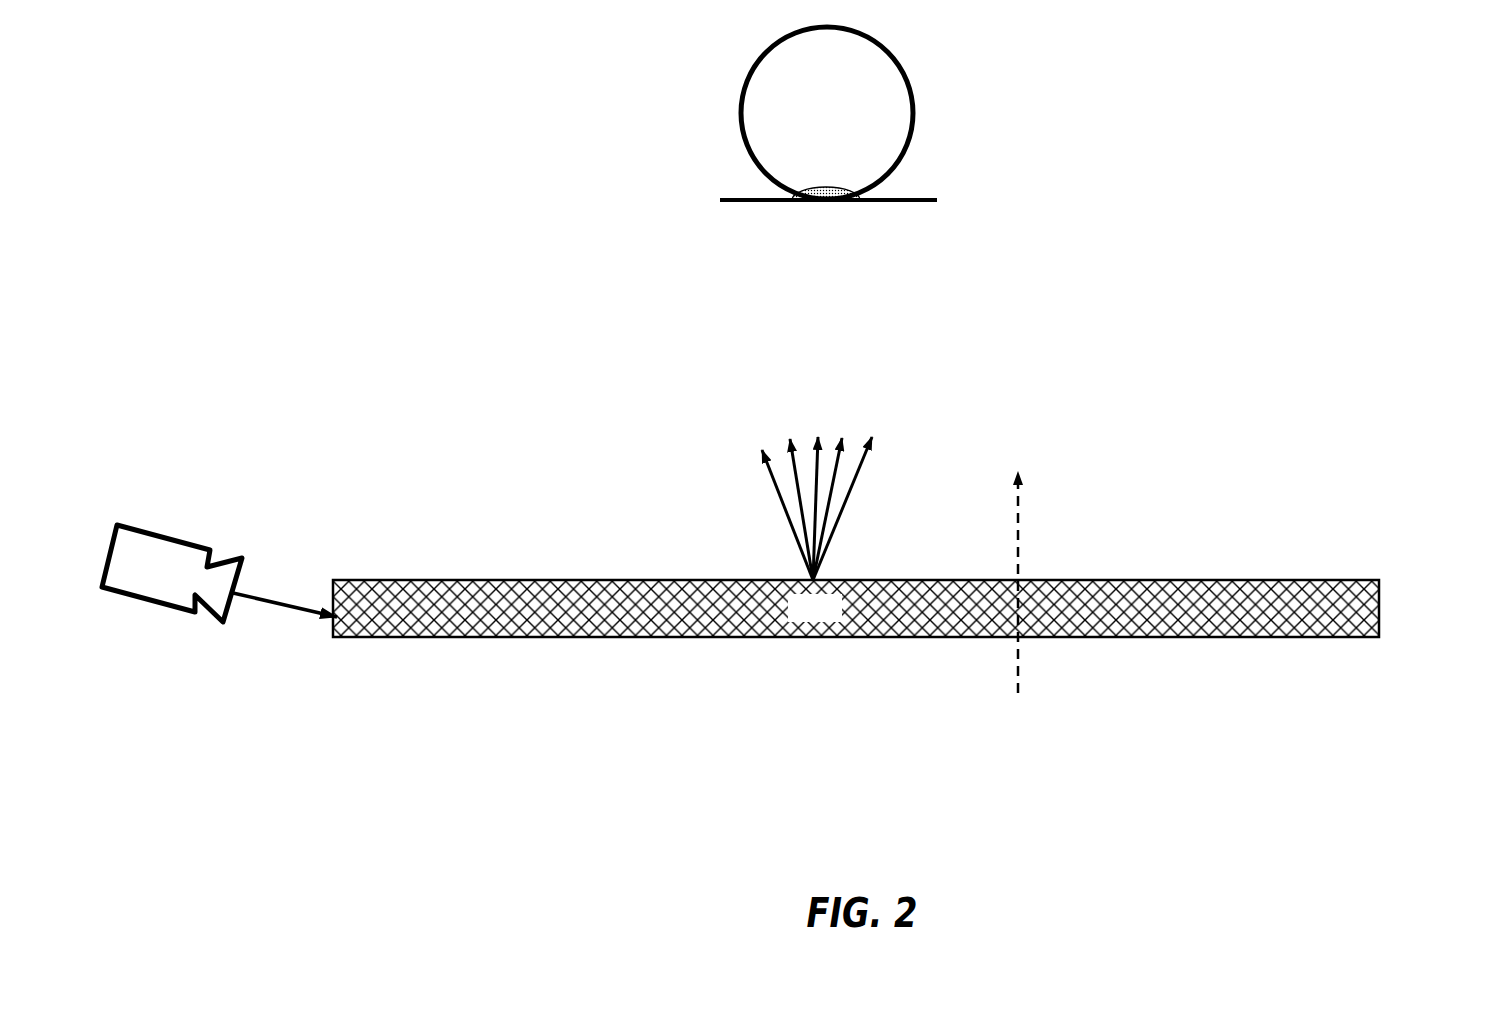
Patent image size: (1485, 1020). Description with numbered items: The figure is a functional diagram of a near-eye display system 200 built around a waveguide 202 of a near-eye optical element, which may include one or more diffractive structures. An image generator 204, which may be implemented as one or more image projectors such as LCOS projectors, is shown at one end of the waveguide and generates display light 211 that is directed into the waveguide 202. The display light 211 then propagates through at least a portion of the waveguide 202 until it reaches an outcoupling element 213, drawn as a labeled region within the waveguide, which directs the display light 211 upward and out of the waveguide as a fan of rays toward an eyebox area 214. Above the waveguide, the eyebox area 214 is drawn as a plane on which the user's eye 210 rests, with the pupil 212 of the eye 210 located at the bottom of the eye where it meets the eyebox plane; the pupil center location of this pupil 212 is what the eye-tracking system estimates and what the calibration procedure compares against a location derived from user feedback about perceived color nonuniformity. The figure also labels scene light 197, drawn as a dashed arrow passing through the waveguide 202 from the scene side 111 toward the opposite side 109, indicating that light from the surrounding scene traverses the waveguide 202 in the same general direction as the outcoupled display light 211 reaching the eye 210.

The near-eye display system 200 is at (1328, 192).
The waveguide 202 is at (1400, 585).
The image generator 204 is at (162, 533).
The eye 210 is at (740, 100).
The display light 211 is at (263, 595).
The pupil 212 is at (817, 180).
The outcoupling element 213 is at (799, 618).
The eyebox area 214 is at (937, 200).
The eyeward side 109 is at (1242, 496).
The scene light 197 is at (1017, 611).
The scene side 111 is at (1238, 688).